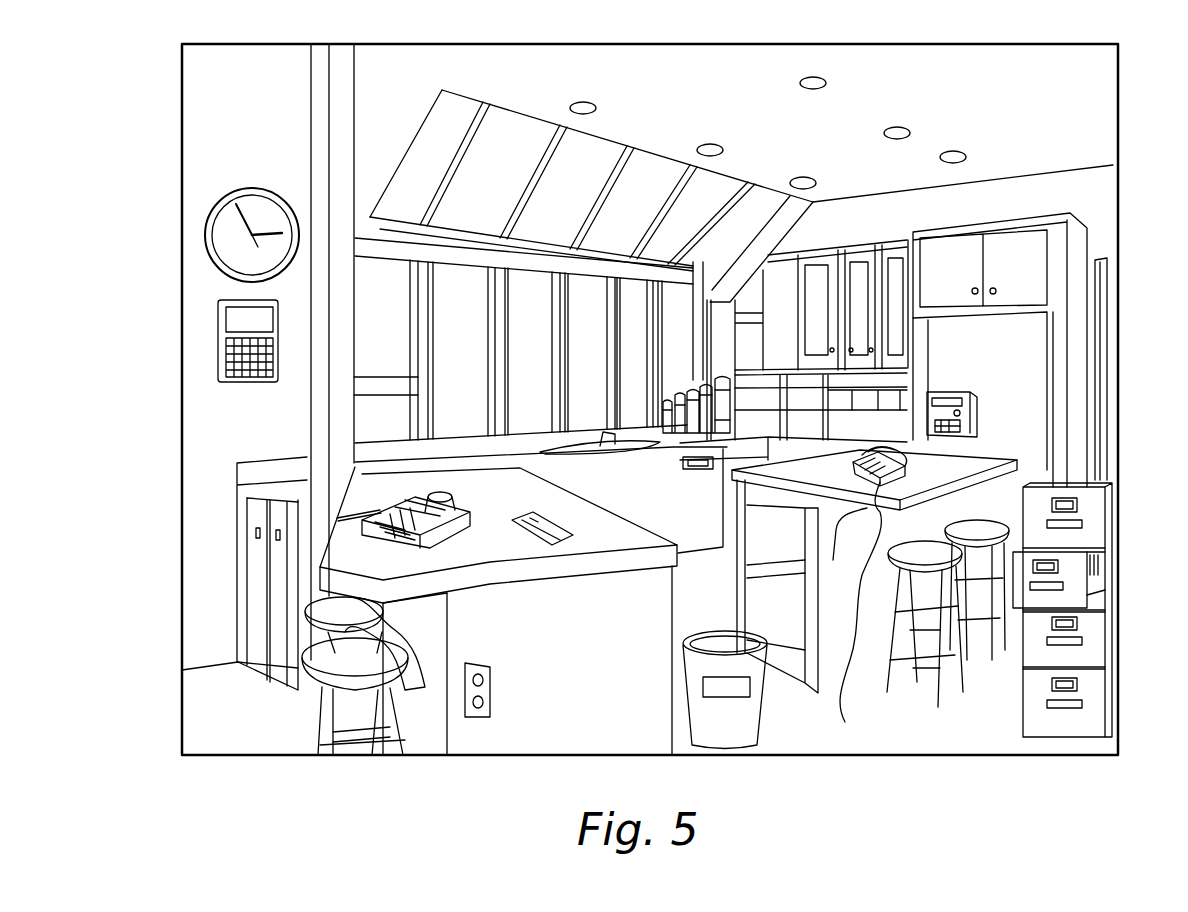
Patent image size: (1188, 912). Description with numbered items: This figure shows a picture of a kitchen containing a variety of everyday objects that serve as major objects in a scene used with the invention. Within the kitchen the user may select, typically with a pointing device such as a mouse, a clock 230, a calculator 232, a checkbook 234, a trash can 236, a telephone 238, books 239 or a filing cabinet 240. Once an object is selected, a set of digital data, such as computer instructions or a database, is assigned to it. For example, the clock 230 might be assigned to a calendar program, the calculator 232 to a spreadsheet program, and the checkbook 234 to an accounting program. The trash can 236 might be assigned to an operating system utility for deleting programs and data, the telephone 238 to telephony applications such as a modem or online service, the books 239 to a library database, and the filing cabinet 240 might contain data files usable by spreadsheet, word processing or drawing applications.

The clock 230 is at (206, 224).
The calculator 232 is at (470, 537).
The checkbook 234 is at (555, 543).
The trash can 236 is at (745, 733).
The telephone 238 is at (875, 591).
The books 239 is at (684, 426).
The filing cabinet 240 is at (1082, 722).